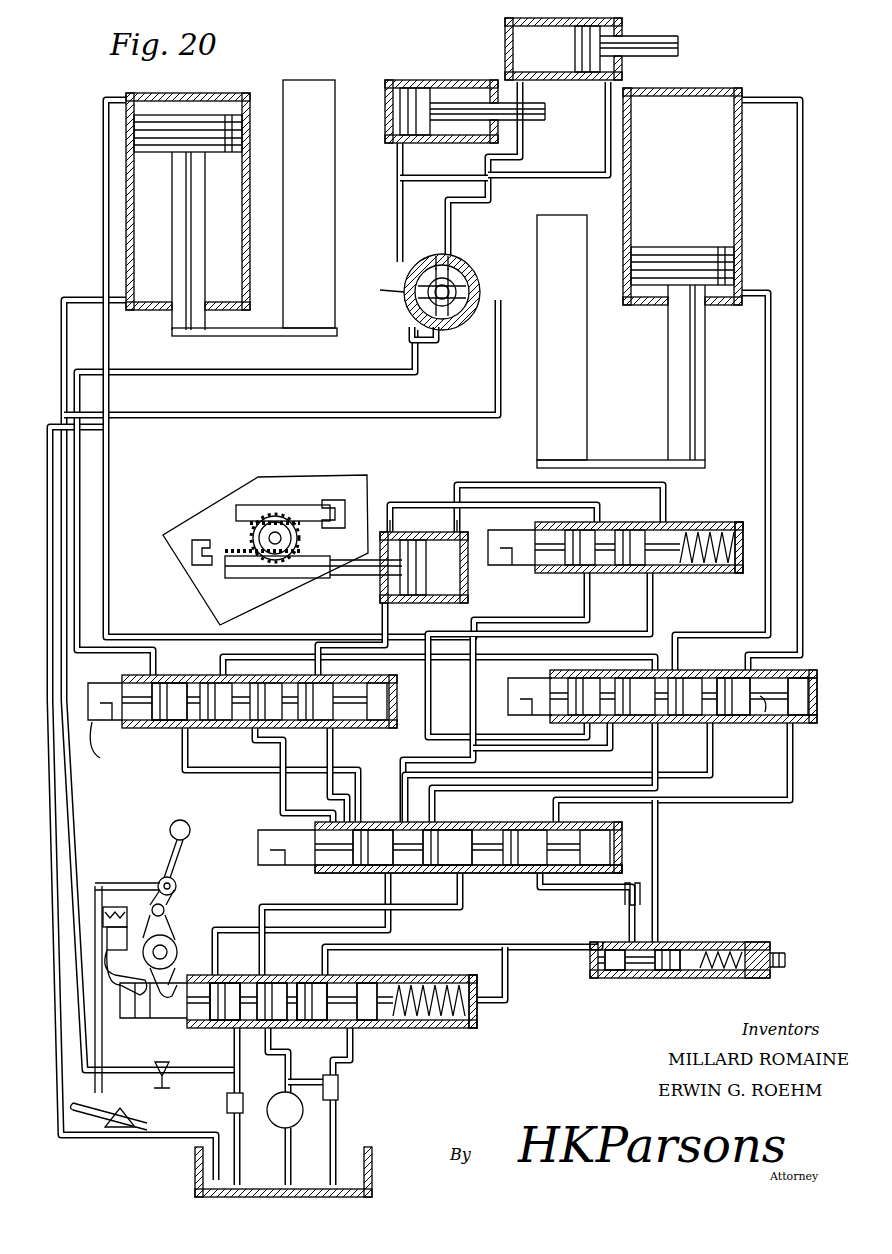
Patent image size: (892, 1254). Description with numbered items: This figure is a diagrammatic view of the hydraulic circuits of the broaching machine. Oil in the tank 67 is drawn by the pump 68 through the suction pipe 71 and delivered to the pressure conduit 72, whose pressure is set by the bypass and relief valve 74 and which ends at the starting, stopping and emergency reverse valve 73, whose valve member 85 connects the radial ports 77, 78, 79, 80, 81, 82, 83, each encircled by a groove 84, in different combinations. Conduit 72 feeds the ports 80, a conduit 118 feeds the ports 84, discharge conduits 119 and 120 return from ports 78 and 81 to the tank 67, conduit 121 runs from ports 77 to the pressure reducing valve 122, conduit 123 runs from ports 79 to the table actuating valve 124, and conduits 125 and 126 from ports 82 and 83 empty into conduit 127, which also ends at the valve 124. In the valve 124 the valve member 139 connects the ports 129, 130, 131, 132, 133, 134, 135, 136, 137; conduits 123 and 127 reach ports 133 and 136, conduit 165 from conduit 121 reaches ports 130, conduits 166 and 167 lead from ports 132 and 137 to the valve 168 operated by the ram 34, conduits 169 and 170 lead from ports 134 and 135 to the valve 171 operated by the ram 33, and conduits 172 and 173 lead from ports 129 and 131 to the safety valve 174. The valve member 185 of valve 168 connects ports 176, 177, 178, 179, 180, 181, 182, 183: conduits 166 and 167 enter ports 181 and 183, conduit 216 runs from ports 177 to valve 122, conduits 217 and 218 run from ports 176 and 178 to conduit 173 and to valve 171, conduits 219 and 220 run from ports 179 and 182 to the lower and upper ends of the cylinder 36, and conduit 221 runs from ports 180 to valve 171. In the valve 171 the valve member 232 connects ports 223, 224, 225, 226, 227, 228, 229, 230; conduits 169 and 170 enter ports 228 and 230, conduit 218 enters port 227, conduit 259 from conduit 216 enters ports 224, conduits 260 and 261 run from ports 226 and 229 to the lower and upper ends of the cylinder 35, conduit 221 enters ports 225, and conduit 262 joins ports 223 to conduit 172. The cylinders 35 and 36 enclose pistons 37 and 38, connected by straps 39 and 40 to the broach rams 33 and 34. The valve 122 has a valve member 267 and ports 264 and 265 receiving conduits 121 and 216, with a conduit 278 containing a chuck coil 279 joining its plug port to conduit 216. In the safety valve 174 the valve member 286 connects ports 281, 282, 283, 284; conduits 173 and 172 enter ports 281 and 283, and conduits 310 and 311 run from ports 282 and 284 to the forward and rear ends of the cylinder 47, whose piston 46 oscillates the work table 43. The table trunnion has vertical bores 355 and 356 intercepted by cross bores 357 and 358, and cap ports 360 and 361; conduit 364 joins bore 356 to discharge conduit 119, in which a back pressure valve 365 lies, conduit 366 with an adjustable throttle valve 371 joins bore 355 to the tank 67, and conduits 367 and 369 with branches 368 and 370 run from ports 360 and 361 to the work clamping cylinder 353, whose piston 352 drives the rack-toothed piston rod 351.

The ram 33 is at (336, 248).
The ram 34 is at (580, 338).
The cylinder 35 is at (246, 246).
The cylinder 36 is at (622, 205).
The piston 37 is at (232, 153).
The piston 38 is at (705, 258).
The strap or bracket 39 is at (278, 320).
The bracket or strap 40 is at (636, 460).
The work table 43 is at (215, 497).
The piston 46 is at (412, 604).
The cylinder 47 is at (436, 528).
The sump or tank 67 is at (372, 1172).
The pump 68 is at (300, 1115).
The suction pipe 71 is at (290, 1145).
The pressure pipe or conduit 72 is at (286, 1082).
The starting, stopping and emergency reverse valve 73 is at (478, 972).
The bypass and relief valve 74 is at (340, 1086).
The radial ports 77 is at (190, 975).
The radial ports 78 is at (218, 1028).
The radial ports 79 is at (238, 975).
The radial ports 80 is at (272, 1028).
The radial ports 81 is at (312, 1028).
The radial ports 82 is at (303, 966).
The radial ports 83 is at (342, 975).
The circumferential groove 84 is at (352, 1030).
The valve member 85 is at (392, 975).
The pipe or conduit 118 is at (352, 1060).
The branch discharge conduit 119 is at (232, 1085).
The branch discharge conduit 120 is at (290, 1052).
The pipe or conduit 121 is at (490, 944).
The pressure reducing or relief valve 122 is at (755, 942).
The pipe or conduit 123 is at (434, 920).
The table actuating valve mechanism 124 is at (320, 874).
The pipe or conduit 125 is at (310, 930).
The pipe or conduit 126 is at (330, 935).
The pipe or conduit 127 is at (507, 960).
The radial ports 129 is at (322, 808).
The radial ports 130 is at (340, 874).
The radial ports 131 is at (362, 800).
The radial ports 132 is at (389, 847).
The radial ports 133 is at (462, 885).
The radial ports 134 is at (463, 847).
The radial ports 135 is at (512, 815).
The radial ports 136 is at (545, 878).
The radial ports 137 is at (560, 815).
The valve member 139 is at (258, 842).
The pipe or conduit 165 is at (392, 898).
The pipe or conduit 166 is at (672, 776).
The pipe or conduit 167 is at (732, 803).
The valve mechanism 168 is at (808, 670).
The pipe or conduit 169 is at (282, 796).
The pipe or conduit 170 is at (326, 789).
The valve mechanism 171 is at (126, 728).
The pipe or conduit 172 is at (476, 700).
The pipe or conduit 173 is at (446, 672).
The valve mechanism 174 is at (742, 522).
The radial ports 176 is at (584, 742).
The radial ports 177 is at (608, 740).
The radial ports 178 is at (655, 735).
The radial ports 179 is at (656, 652).
The radial ports 180 is at (690, 670).
The radial ports 181 is at (718, 735).
The radial ports 182 is at (720, 676).
The radial ports 183 is at (765, 728).
The valve member 185 is at (790, 732).
The pipe or conduit 216 is at (659, 836).
The pipe or conduit 217 is at (510, 754).
The pipe or conduit 218 is at (500, 730).
The pipe or conduit 219 is at (766, 605).
The pipe or conduit 220 is at (802, 604).
The pipe or conduit 221 is at (548, 660).
The radial ports 223 is at (138, 680).
The radial ports 224 is at (160, 730).
The radial ports 225 is at (158, 668).
The radial ports 226 is at (226, 662).
The radial ports 227 is at (240, 748).
The radial ports 228 is at (272, 752).
The radial ports 229 is at (321, 665).
The radial ports 230 is at (350, 704).
The valve member 232 is at (110, 747).
The pipe or conduit 259 is at (180, 772).
The pipe 260 is at (72, 345).
The pipe 261 is at (100, 358).
The pipe or conduit 262 is at (383, 628).
The radial ports 264 is at (690, 940).
The radial ports 265 is at (640, 925).
The valve member 267 is at (680, 978).
The pipe or conduit 278 is at (606, 921).
The chuck coil 279 is at (622, 898).
The radial ports 281 is at (572, 583).
The radial ports 282 is at (600, 520).
The radial ports 283 is at (643, 582).
The radial ports 284 is at (675, 520).
The valve member 286 is at (496, 566).
The pipe or conduit 310 is at (493, 518).
The pipe or conduit 311 is at (520, 476).
The piston rod 351 is at (438, 262).
The piston 352 is at (436, 70).
The cylinder 353 is at (478, 70).
The vertical bore 355 is at (400, 275).
The vertical bore 356 is at (470, 272).
The cross bore 357 is at (532, 110).
The cross bore 358 is at (478, 285).
The port 360 is at (450, 262).
The port 361 is at (447, 330).
The pipe or conduit 364 is at (483, 410).
The back pressure valve mechanism 365 is at (226, 1104).
The pipe or conduit 366 is at (362, 360).
The pipe or conduit 367 is at (452, 222).
The branch pipe or conduit 368 is at (525, 157).
The pipe or conduit 369 is at (402, 213).
The branch 370 is at (520, 176).
The adjustable throttle valve 371 is at (172, 1052).